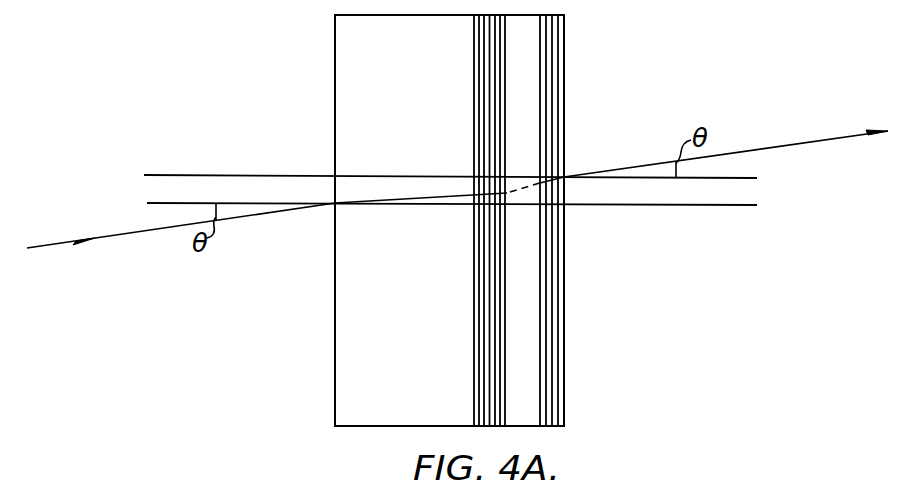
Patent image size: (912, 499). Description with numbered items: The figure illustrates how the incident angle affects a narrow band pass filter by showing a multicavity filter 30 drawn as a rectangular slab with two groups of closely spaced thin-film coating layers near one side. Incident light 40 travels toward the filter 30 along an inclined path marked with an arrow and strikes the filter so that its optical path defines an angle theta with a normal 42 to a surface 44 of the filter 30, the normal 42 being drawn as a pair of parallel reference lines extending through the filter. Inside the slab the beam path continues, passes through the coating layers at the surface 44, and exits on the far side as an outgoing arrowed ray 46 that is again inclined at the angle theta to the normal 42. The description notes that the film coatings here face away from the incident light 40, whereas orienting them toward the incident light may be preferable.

The multicavity narrow band pass filter 30 is at (334, 38).
The incident light 40 is at (152, 231).
The normal 42 is at (159, 203).
The surface 44 is at (565, 306).
The output light beam 46 is at (812, 143).